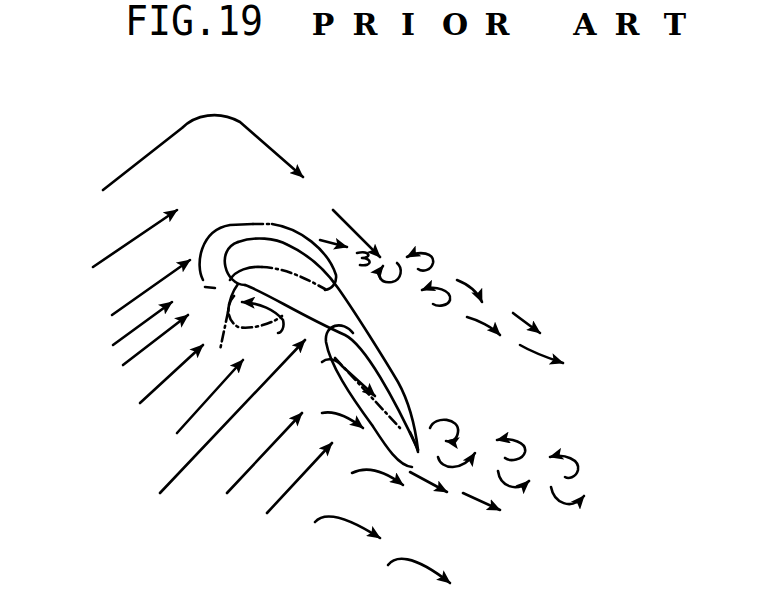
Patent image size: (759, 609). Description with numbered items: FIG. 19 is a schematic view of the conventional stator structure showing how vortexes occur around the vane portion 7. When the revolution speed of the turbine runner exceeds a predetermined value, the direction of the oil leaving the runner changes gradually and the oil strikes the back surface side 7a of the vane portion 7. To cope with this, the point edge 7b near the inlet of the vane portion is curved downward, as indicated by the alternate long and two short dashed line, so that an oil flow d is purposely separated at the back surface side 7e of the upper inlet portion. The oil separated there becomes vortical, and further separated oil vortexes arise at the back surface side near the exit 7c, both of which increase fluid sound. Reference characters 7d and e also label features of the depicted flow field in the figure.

The vane portion 7 is at (378, 318).
The back surface side of the vane portion 7a is at (223, 225).
The point edge near the inlet of the vane portion 7b is at (220, 350).
The exit 7c is at (420, 457).
The suction side of blade 7d is at (425, 432).
The back surface side of the upper inlet portion 7e is at (282, 243).
The oil flow d is at (410, 257).
The wake vortex e is at (578, 468).